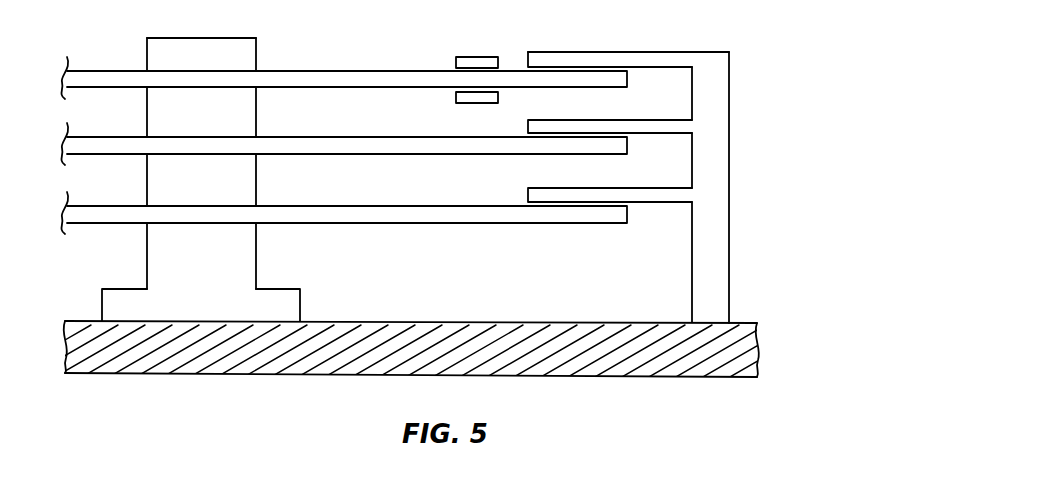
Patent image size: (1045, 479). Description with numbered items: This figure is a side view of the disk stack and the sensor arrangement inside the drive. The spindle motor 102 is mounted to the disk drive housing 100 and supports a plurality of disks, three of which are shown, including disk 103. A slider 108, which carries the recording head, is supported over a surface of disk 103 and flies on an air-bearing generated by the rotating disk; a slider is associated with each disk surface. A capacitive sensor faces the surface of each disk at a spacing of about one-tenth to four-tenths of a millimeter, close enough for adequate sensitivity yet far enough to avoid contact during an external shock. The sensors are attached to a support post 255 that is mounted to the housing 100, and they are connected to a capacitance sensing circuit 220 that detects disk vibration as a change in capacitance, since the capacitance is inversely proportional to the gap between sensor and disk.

The disk drive housing 100 is at (752, 345).
The spindle motor 102 is at (234, 38).
The disk 103 is at (310, 71).
The slider 108 is at (473, 57).
The capacitance sensing circuit 220 is at (580, 52).
The support post 255 is at (717, 147).